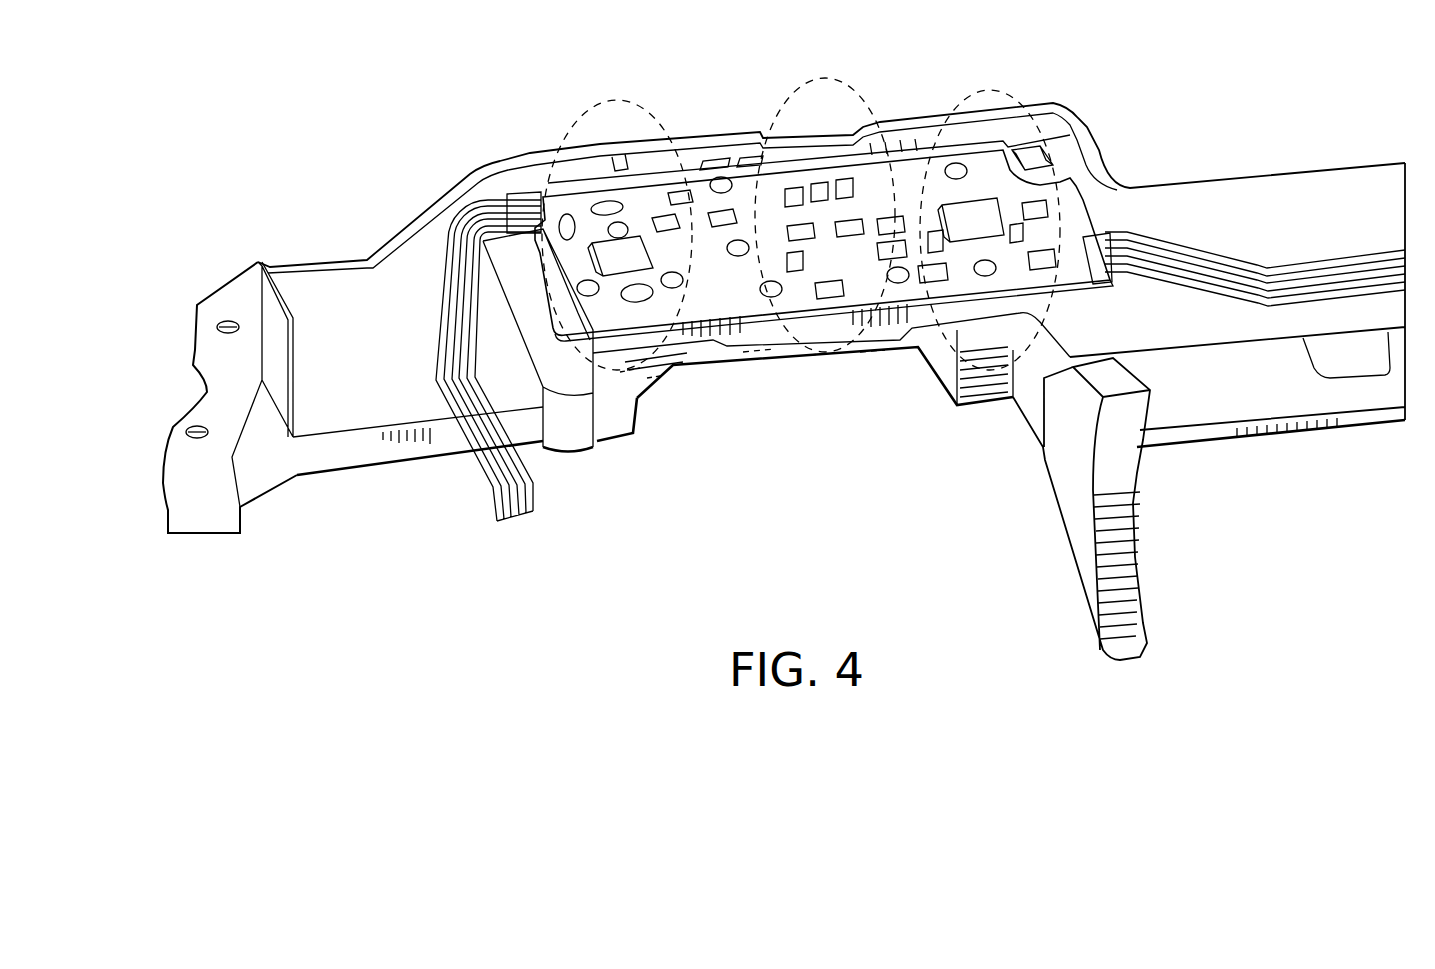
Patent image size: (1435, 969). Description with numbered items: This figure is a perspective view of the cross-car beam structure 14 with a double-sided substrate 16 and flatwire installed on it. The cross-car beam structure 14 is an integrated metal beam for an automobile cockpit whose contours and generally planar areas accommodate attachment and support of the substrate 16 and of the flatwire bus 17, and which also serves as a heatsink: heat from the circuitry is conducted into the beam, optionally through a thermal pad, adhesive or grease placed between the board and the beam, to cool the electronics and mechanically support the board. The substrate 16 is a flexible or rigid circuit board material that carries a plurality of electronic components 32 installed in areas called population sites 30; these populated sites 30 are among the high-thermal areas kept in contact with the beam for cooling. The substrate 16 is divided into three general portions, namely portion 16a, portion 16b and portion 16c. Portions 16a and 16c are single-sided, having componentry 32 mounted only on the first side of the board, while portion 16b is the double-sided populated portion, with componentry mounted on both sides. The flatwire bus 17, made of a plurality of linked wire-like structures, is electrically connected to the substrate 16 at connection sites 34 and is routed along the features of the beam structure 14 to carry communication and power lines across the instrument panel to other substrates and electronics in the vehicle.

The cross-car beam structure 14 is at (1368, 413).
The substrate 16 is at (1055, 165).
The portion of the substrate 16a is at (645, 395).
The portion of the substrate 16b is at (777, 356).
The portion of the substrate 16c is at (957, 400).
The flatwire bus structure 17 is at (455, 243).
The population site 30 is at (630, 222).
The electronic component 32 is at (675, 191).
The connection site 34 is at (530, 210).